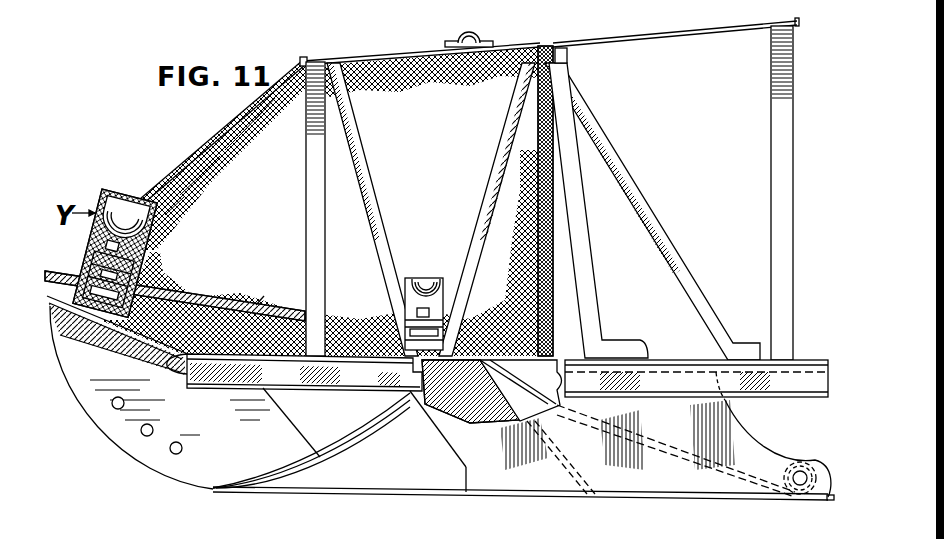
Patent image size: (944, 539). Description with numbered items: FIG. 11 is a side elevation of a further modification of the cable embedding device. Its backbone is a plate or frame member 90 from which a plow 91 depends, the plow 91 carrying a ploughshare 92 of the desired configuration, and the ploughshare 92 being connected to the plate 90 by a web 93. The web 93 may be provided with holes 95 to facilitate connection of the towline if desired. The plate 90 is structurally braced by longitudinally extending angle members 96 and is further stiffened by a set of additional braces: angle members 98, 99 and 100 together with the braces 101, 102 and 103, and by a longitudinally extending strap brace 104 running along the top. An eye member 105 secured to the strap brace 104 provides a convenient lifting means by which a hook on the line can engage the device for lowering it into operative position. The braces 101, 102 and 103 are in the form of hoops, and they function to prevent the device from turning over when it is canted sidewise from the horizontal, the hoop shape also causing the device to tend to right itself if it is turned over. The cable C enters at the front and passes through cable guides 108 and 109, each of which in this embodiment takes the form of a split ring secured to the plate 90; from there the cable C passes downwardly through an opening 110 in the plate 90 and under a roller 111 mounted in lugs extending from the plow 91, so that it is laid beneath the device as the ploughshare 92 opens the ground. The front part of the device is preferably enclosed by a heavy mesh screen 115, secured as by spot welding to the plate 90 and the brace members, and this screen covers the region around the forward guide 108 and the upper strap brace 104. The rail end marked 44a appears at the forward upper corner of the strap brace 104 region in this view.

The rail end 44a is at (304, 59).
The plate 90 is at (678, 361).
The plow 91 is at (457, 493).
The ploughshare 92 is at (273, 477).
The web 93 is at (132, 443).
The holes 95 is at (112, 407).
The angle members 96 is at (100, 343).
The angle member 98 is at (362, 193).
The angle member 99 is at (660, 230).
The angle member 100 is at (592, 285).
The hoop-shaped brace 101 is at (302, 188).
The hoop-shaped brace 102 is at (553, 312).
The hoop-shaped brace 103 is at (780, 215).
The strap brace 104 is at (376, 59).
The eye member 105 is at (476, 30).
The cable guide 108 is at (125, 195).
The cable guide 109 is at (420, 283).
The opening 110 is at (530, 397).
The roller 111 is at (813, 448).
The mesh screen 115 is at (198, 165).
The cable C is at (175, 296).